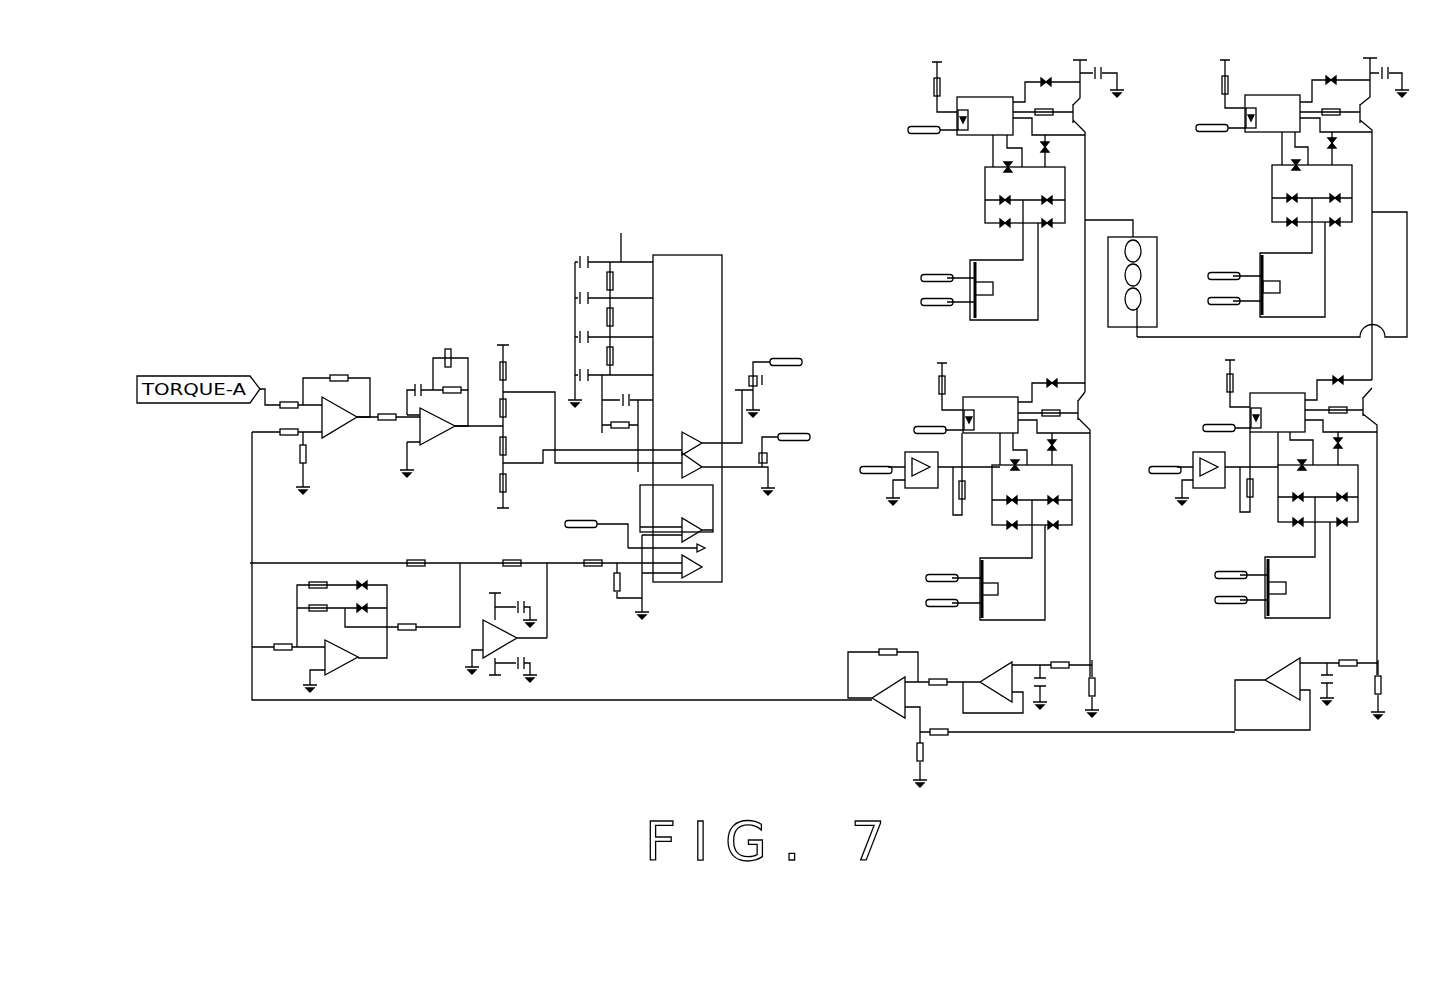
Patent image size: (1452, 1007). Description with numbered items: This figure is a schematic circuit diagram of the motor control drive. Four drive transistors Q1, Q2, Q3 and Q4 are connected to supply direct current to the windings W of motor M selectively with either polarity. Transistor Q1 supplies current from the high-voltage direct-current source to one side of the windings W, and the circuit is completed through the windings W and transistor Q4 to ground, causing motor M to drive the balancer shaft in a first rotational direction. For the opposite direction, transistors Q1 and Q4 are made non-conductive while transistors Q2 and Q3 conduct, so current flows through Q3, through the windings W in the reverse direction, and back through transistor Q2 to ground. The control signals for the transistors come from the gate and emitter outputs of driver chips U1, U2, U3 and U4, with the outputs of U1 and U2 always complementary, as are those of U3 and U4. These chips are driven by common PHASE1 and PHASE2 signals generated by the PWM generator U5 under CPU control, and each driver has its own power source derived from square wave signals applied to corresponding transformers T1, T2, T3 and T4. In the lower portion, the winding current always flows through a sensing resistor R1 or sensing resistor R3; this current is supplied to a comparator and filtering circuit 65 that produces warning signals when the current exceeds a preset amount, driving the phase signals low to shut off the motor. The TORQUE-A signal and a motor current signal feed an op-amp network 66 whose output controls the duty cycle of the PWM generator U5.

The comparator and filtering circuit 65 is at (417, 542).
The op-amp network 66 is at (404, 360).
The driver chip U1 is at (988, 85).
The driver chip U2 is at (1020, 388).
The driver chip U3 is at (1293, 82).
The driver chip U4 is at (1296, 386).
The PWM generator U5 is at (673, 255).
The drive transistor Q1 is at (1095, 110).
The drive transistor Q2 is at (1097, 404).
The drive transistor Q3 is at (1385, 111).
The drive transistor Q4 is at (1394, 400).
The transformer T1 is at (958, 318).
The transformer T2 is at (1004, 633).
The transformer T3 is at (1265, 242).
The transformer T4 is at (1276, 628).
The sensing resistor R1 is at (1378, 673).
The sensing resistor R3 is at (1097, 685).
The windings W is at (1137, 257).
The motor M is at (1157, 244).